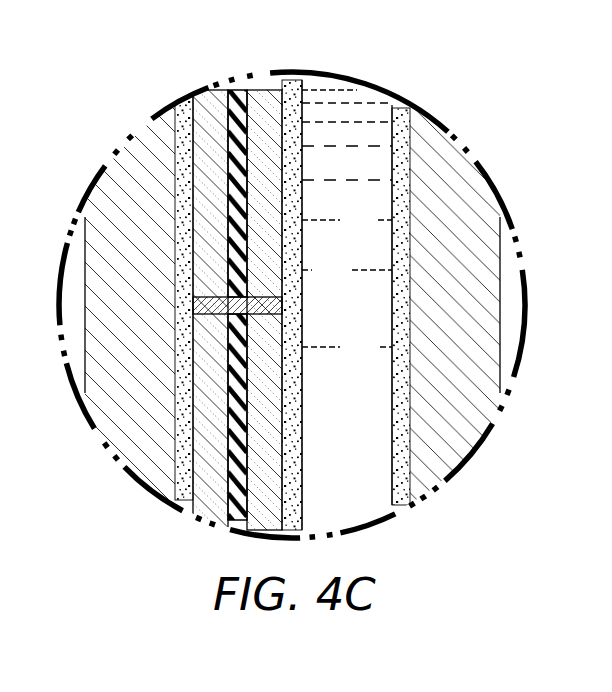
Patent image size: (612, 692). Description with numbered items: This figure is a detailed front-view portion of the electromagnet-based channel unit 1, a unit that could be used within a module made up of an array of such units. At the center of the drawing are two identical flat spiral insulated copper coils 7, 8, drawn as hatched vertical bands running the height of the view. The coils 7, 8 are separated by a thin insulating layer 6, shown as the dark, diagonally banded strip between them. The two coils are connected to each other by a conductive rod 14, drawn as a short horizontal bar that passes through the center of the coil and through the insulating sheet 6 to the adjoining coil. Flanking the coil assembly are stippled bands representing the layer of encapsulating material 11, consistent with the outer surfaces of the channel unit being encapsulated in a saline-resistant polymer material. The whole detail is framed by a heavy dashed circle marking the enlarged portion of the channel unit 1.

The electromagnet-based channel unit 1 is at (470, 90).
The thin insulating layer 6 is at (237, 90).
The spiral insulated copper coil 7 is at (210, 107).
The spiral insulated copper coil 8 is at (267, 83).
The layer of encapsulating material 11 is at (293, 503).
The conductive rod 14 is at (213, 300).